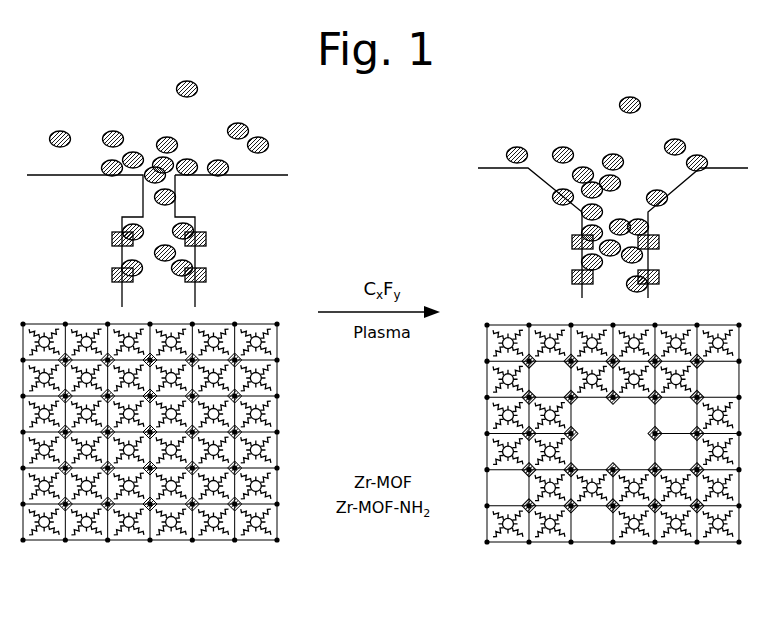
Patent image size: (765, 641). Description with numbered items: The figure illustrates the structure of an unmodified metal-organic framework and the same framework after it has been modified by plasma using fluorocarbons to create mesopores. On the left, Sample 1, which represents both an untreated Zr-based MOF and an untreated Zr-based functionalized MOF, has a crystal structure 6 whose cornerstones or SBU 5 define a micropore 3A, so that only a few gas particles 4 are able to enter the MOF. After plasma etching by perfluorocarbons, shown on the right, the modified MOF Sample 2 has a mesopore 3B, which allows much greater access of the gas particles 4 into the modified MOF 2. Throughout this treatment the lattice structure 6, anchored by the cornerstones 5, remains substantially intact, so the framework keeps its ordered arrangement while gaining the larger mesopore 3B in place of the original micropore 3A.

The Sample 1 is at (133, 569).
The modified MOF Sample 2 is at (566, 572).
The micropore 3A is at (178, 185).
The mesopore 3B is at (663, 178).
The gas particles 4 is at (270, 145).
The cornerstones or SBU 5 is at (207, 275).
The crystal structure 6 is at (207, 253).